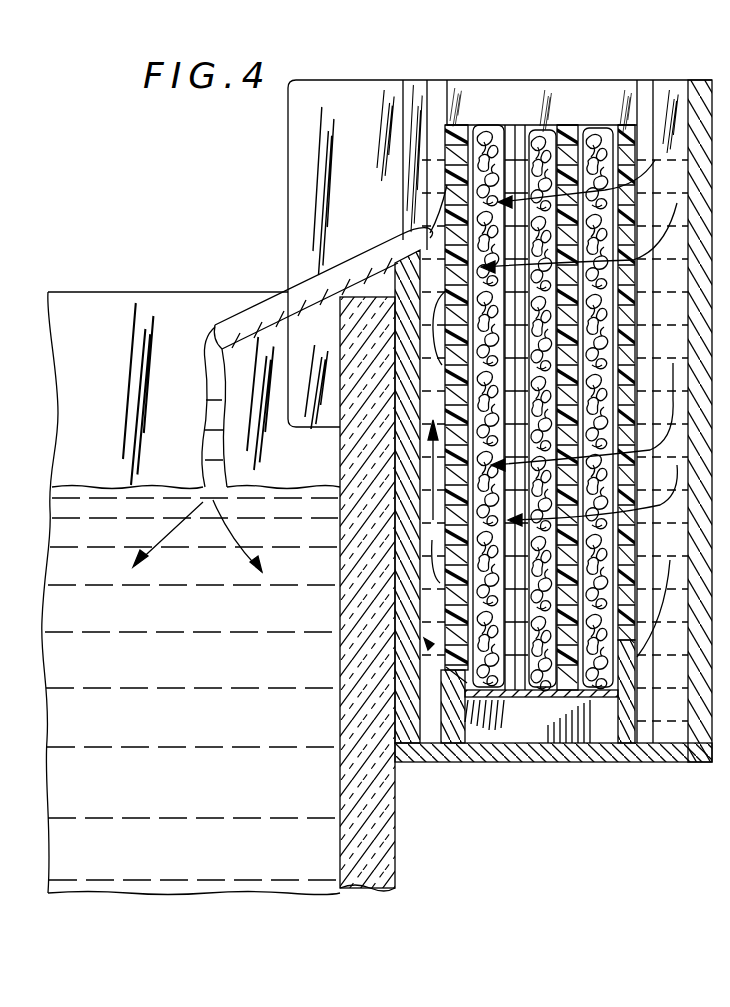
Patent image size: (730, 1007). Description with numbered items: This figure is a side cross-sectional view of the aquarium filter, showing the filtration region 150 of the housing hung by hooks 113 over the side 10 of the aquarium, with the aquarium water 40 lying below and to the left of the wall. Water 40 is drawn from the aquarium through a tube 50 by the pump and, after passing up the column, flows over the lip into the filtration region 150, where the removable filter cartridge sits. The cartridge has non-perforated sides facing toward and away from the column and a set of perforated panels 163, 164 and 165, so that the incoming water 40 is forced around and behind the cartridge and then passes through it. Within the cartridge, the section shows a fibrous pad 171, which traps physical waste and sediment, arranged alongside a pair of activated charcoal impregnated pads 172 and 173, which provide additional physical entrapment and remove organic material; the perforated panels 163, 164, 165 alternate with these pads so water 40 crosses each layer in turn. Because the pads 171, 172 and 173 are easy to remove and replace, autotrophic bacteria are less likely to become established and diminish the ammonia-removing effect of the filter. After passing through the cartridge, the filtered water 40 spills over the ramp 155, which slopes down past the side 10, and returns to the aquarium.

The side 10 is at (394, 828).
The water 40 is at (211, 614).
The tube 50 is at (527, 862).
The hooks 113 is at (298, 207).
The filtration region 150 is at (562, 778).
The ramp 155 is at (258, 318).
The perforated panel 163 is at (628, 128).
The perforated panel 164 is at (573, 128).
The perforated panel 165 is at (457, 125).
The fibrous pad 171 is at (600, 130).
The activated charcoal impregnated pad 172 is at (535, 132).
The activated charcoal impregnated pad 173 is at (490, 128).